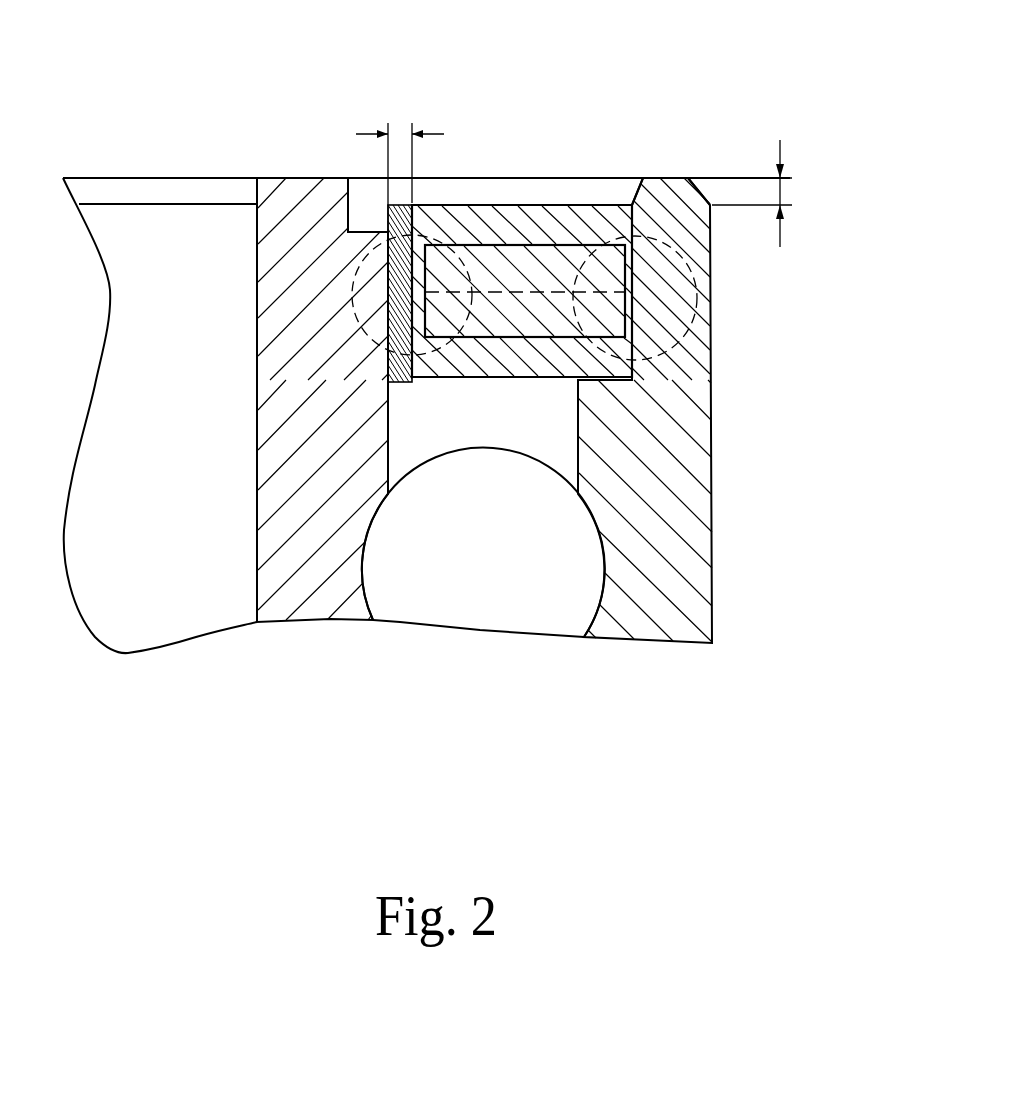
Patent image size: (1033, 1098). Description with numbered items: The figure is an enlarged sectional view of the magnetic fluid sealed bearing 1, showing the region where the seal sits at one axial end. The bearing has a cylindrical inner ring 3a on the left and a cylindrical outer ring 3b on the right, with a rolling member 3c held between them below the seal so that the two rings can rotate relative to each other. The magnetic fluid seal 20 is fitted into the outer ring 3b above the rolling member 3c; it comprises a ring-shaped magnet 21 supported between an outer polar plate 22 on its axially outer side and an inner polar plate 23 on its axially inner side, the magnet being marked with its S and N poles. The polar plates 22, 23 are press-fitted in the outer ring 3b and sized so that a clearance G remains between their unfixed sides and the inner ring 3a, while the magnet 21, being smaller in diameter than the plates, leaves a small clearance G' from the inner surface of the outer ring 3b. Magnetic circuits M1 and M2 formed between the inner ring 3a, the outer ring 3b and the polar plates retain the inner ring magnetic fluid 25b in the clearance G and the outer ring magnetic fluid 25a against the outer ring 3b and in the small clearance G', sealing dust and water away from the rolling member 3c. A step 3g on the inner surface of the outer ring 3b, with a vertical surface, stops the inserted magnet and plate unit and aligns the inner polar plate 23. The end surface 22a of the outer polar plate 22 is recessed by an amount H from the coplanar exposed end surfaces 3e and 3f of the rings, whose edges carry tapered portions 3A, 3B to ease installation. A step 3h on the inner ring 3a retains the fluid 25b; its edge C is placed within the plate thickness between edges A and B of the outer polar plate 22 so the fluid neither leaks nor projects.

The magnetic fluid sealed bearing 1 is at (648, 142).
The magnetic fluid seal 20 is at (525, 146).
The magnet 21 is at (610, 280).
The outer polar plate 22 is at (502, 220).
The end surface of outer polar plate 22a is at (483, 204).
The inner polar plate 23 is at (483, 370).
The outer ring magnetic fluid 25a is at (634, 203).
The inner ring magnetic fluid 25b is at (399, 274).
The tapered portion of inner ring 3A is at (268, 193).
The tapered portion of outer ring 3B is at (634, 207).
The inner ring 3a is at (312, 600).
The outer ring 3b is at (638, 620).
The rolling member 3c is at (478, 597).
The exposed end surface of inner ring 3e is at (307, 175).
The exposed end surface of outer ring 3f is at (688, 178).
The step 3g is at (600, 375).
The step 3h is at (385, 229).
The edge of outer polar plate A is at (413, 204).
The edge of outer polar plate B is at (389, 303).
The edge of step C is at (389, 236).
The clearance G is at (400, 159).
The small clearance G' is at (739, 291).
The recess amount H is at (755, 193).
The magnetic circuit M1 is at (388, 350).
The magnetic circuit M2 is at (660, 356).
The south pole S is at (525, 266).
The north pole N is at (524, 317).